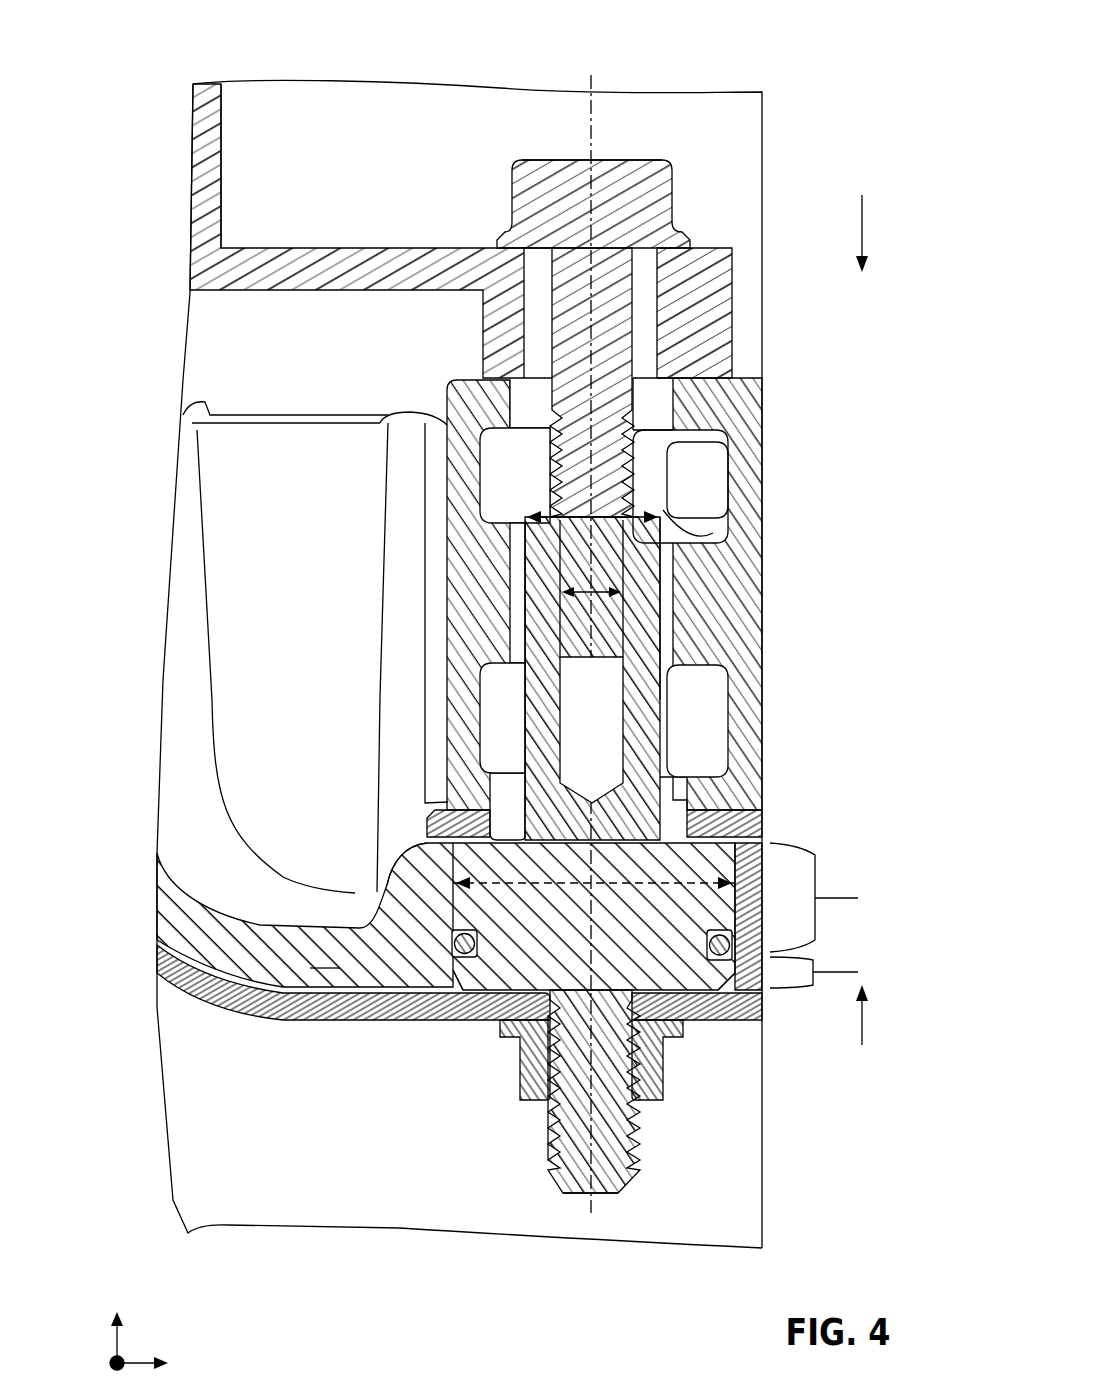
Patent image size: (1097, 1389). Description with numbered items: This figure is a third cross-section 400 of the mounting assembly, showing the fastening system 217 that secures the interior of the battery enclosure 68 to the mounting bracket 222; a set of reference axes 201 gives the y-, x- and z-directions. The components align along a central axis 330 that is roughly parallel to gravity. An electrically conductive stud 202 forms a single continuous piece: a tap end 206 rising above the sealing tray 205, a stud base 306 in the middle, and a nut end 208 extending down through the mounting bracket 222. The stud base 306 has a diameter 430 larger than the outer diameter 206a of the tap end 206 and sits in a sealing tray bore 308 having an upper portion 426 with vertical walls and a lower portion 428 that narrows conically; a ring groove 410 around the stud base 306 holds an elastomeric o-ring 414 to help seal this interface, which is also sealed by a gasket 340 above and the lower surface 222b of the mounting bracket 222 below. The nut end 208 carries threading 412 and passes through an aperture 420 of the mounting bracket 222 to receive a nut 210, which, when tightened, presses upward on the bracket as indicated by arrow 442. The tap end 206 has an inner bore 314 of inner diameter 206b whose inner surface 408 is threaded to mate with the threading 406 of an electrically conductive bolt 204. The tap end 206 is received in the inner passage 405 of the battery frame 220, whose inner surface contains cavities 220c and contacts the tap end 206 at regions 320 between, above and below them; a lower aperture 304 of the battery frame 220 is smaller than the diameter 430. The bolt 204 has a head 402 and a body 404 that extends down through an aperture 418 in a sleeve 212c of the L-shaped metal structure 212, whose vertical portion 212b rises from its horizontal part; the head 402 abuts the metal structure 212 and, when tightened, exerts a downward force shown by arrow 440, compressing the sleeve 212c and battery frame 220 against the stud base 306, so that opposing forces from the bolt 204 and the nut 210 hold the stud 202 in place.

The battery enclosure 68 is at (138, 98).
The reference axes 201 is at (155, 1328).
The electrically conductive stud 202 is at (594, 690).
The electrically conductive bolt 204 is at (576, 170).
The sealing tray 205 is at (446, 696).
The tap end 206 is at (598, 652).
The outer diameter 206a is at (556, 596).
The inner diameter 206b is at (520, 656).
The nut end 208 is at (596, 1198).
The nut 210 is at (648, 1088).
The metal structure 212 is at (472, 241).
The vertical portion 212b is at (214, 166).
The sleeve 212c is at (708, 256).
The fastening system 217 is at (688, 122).
The battery frame 220 is at (543, 568).
The cavities 220c is at (492, 490).
The mounting bracket 222 is at (338, 1066).
The lower surface 222b is at (420, 1005).
The lower aperture 304 is at (676, 802).
The stud base 306 is at (676, 960).
The sealing tray bore 308 is at (452, 868).
The inner bore 314 is at (612, 753).
The regions 320 is at (682, 572).
The central axis 330 is at (588, 84).
The gasket 340 is at (733, 832).
The third cross-section 400 is at (852, 70).
The head 402 is at (656, 176).
The body 404 is at (612, 312).
The inner passage 405 is at (520, 394).
The threading 406 is at (638, 456).
The inner surface 408 is at (624, 686).
The ring groove 410 is at (662, 520).
The threading 412 is at (548, 1110).
The elastomeric o-ring 414 is at (456, 945).
The aperture 418 is at (526, 266).
The aperture 420 is at (550, 1018).
The upper portion 426 is at (832, 897).
The lower portion 428 is at (833, 971).
The diameter 430 is at (620, 887).
The arrow 440 is at (866, 220).
The arrow 442 is at (862, 1028).